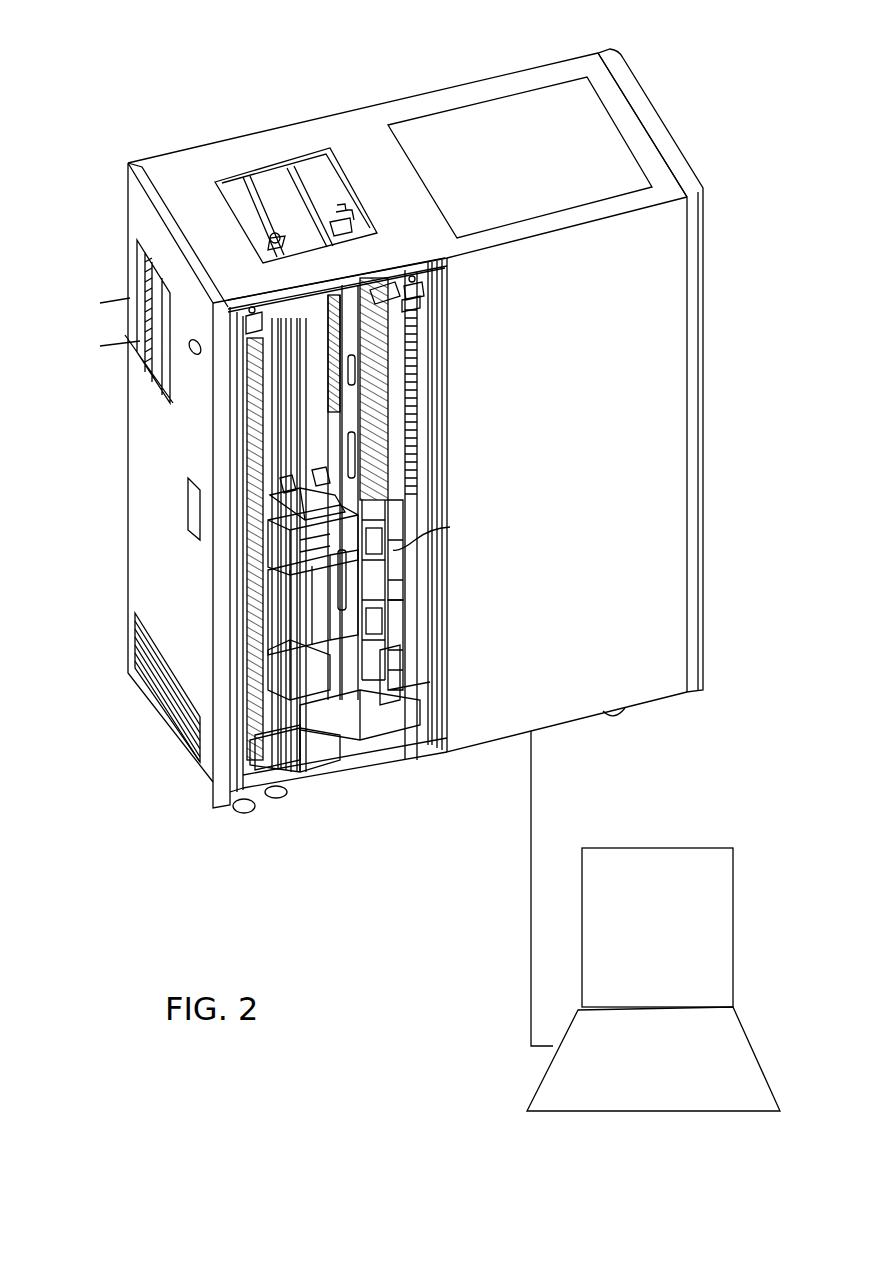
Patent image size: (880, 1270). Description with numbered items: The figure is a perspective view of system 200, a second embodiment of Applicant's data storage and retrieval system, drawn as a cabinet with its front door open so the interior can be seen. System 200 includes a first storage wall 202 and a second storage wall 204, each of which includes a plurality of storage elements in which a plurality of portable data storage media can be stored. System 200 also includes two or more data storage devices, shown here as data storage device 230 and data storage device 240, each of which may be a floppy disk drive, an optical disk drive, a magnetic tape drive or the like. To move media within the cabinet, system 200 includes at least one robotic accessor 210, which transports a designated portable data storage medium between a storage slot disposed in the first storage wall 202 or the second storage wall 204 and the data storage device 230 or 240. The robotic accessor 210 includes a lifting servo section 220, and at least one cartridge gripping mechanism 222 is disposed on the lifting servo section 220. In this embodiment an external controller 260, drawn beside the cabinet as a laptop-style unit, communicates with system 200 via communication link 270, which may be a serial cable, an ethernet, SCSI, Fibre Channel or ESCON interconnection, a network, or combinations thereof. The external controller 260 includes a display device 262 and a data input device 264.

The data storage and retrieval system 200 is at (401, 431).
The first storage wall 202 is at (360, 408).
The second storage wall 204 is at (247, 434).
The robotic accessor 210 is at (305, 740).
The lifting servo section 220 is at (268, 562).
The cartridge gripping mechanism 222 is at (268, 527).
The data storage device 230 is at (395, 572).
The data storage device 240 is at (395, 637).
The external controller 260 is at (632, 940).
The display device 262 is at (673, 868).
The data input device 264 is at (698, 1034).
The communication link 270 is at (531, 923).